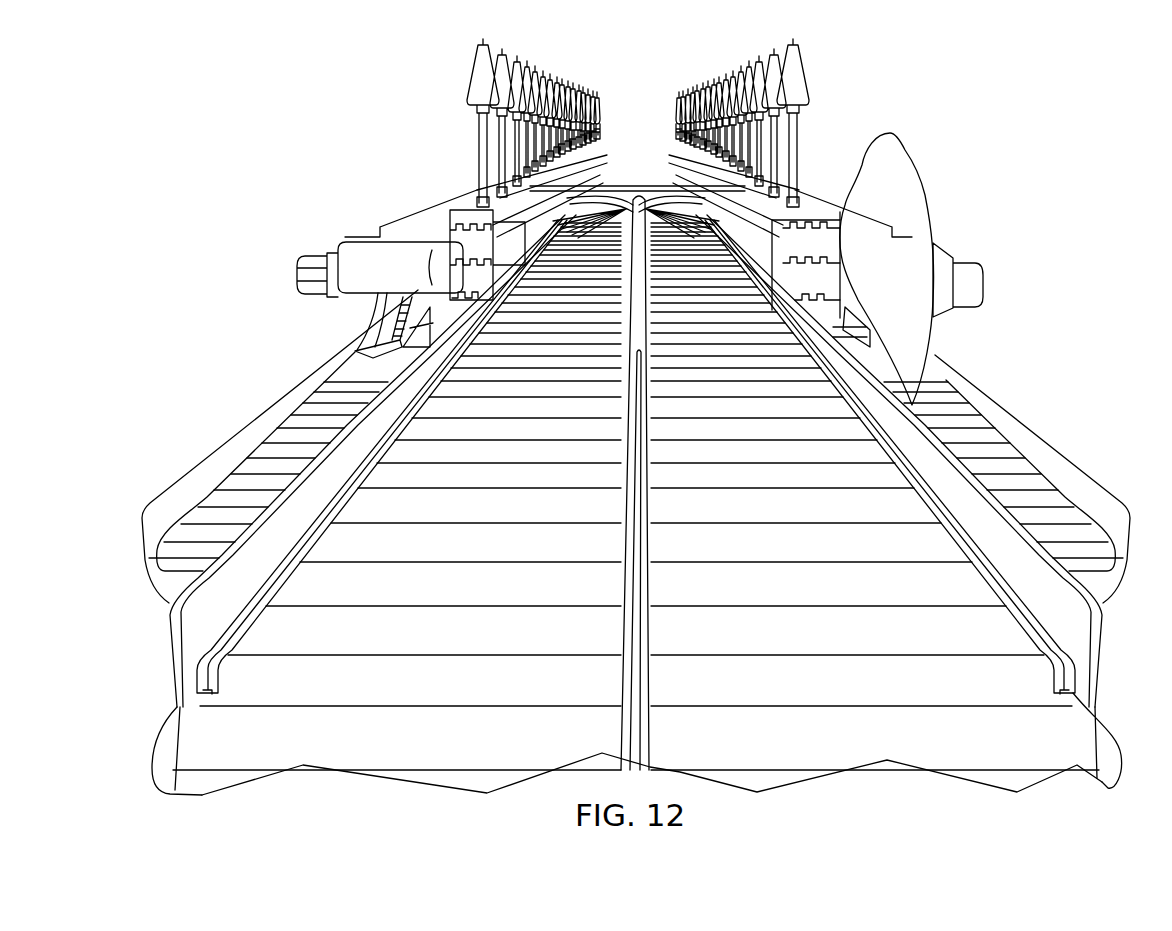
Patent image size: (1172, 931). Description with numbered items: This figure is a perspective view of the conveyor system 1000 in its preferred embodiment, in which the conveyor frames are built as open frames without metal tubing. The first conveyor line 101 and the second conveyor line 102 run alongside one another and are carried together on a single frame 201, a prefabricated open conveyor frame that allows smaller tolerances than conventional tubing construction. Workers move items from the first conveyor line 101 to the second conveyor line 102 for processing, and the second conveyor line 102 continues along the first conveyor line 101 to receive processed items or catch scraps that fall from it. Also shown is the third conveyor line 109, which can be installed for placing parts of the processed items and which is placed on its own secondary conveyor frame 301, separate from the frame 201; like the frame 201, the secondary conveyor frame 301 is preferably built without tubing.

The conveyor system 1000 is at (410, 151).
The first conveyor line 101 is at (823, 247).
The second conveyor line 102 is at (912, 750).
The third conveyor line 109 is at (1085, 520).
The frame 201 is at (817, 210).
The secondary conveyor frame 301 is at (1020, 425).